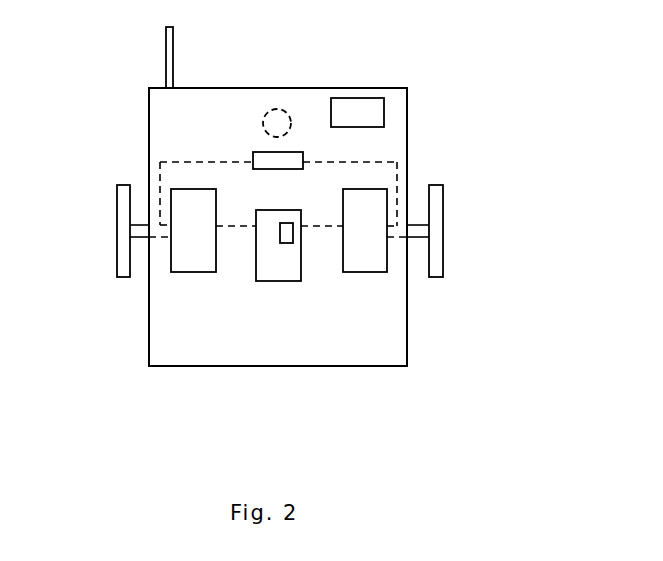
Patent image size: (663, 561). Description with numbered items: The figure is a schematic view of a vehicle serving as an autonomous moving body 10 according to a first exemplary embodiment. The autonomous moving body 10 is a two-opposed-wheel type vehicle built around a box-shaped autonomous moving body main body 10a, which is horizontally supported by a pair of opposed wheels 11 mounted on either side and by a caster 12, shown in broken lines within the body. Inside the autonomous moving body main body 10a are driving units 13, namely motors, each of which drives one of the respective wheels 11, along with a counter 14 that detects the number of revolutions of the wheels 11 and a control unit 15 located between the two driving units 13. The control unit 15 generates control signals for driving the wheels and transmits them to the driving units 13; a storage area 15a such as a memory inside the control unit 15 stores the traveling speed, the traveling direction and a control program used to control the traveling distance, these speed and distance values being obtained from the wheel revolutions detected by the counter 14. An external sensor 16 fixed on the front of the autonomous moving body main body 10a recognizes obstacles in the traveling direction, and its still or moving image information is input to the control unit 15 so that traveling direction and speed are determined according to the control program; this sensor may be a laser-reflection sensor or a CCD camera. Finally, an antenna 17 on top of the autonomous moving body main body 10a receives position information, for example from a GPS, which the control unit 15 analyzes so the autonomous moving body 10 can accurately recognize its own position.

The autonomous moving body 10 is at (470, 88).
The autonomous moving body main body 10a is at (377, 366).
The opposed wheels 11 is at (117, 220).
The caster 12 is at (277, 108).
The driving units (motors) 13 is at (177, 274).
The counter 14 is at (253, 152).
The control unit 15 is at (283, 281).
The storage area 15a is at (293, 232).
The external sensor 16 is at (363, 98).
The antenna 17 is at (166, 65).